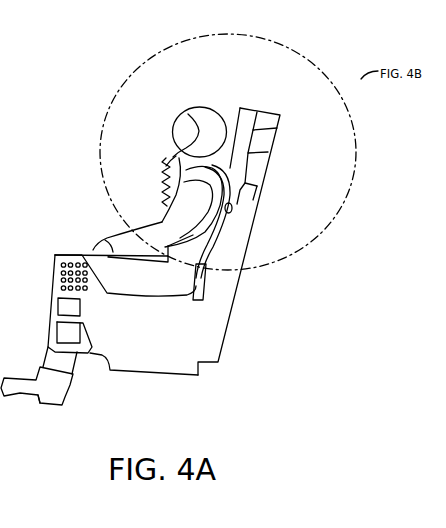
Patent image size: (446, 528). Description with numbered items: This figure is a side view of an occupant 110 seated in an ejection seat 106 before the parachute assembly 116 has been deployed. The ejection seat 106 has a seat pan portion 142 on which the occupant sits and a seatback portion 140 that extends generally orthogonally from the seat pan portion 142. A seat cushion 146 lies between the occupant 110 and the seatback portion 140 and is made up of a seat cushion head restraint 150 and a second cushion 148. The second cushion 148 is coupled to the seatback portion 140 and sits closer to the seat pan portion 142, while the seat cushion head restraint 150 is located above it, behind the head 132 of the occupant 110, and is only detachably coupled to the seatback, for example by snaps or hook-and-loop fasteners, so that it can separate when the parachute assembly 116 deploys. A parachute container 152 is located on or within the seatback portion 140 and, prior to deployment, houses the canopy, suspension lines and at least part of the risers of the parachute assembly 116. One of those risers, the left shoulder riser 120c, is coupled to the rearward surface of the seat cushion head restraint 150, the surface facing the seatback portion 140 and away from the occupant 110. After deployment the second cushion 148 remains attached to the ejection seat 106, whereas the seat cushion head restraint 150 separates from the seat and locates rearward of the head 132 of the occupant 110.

The occupant 110 is at (164, 116).
The head 132 is at (202, 122).
The ejection seat 106 is at (262, 98).
The parachute assembly 116 is at (229, 126).
The seatback portion 140 is at (259, 130).
The parachute container 152 is at (260, 167).
The left shoulder riser 120c is at (243, 206).
The seat cushion head restraint 150 is at (228, 214).
The seat cushion 146 is at (231, 245).
The second cushion 148 is at (203, 272).
The seat pan portion 142 is at (138, 333).